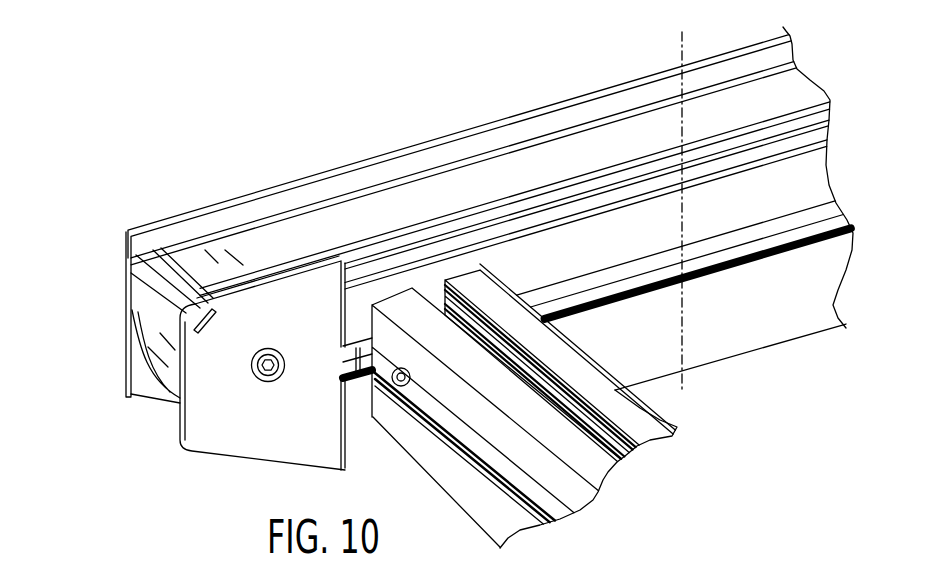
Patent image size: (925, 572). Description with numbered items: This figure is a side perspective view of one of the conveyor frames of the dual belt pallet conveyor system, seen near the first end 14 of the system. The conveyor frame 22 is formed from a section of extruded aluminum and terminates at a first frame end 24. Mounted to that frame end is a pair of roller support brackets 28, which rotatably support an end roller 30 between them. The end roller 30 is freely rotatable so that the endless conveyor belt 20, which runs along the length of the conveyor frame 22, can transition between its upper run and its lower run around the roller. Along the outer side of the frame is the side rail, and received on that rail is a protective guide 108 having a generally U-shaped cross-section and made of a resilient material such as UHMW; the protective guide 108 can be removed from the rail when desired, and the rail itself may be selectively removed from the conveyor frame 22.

The protective guide 108 is at (257, 197).
The conveyor belt 20 is at (585, 150).
The conveyor frame 22 is at (802, 317).
The first frame end 24 is at (347, 443).
The roller support brackets 28 is at (243, 433).
The end roller 30 is at (125, 332).
The first end 14 is at (714, 392).